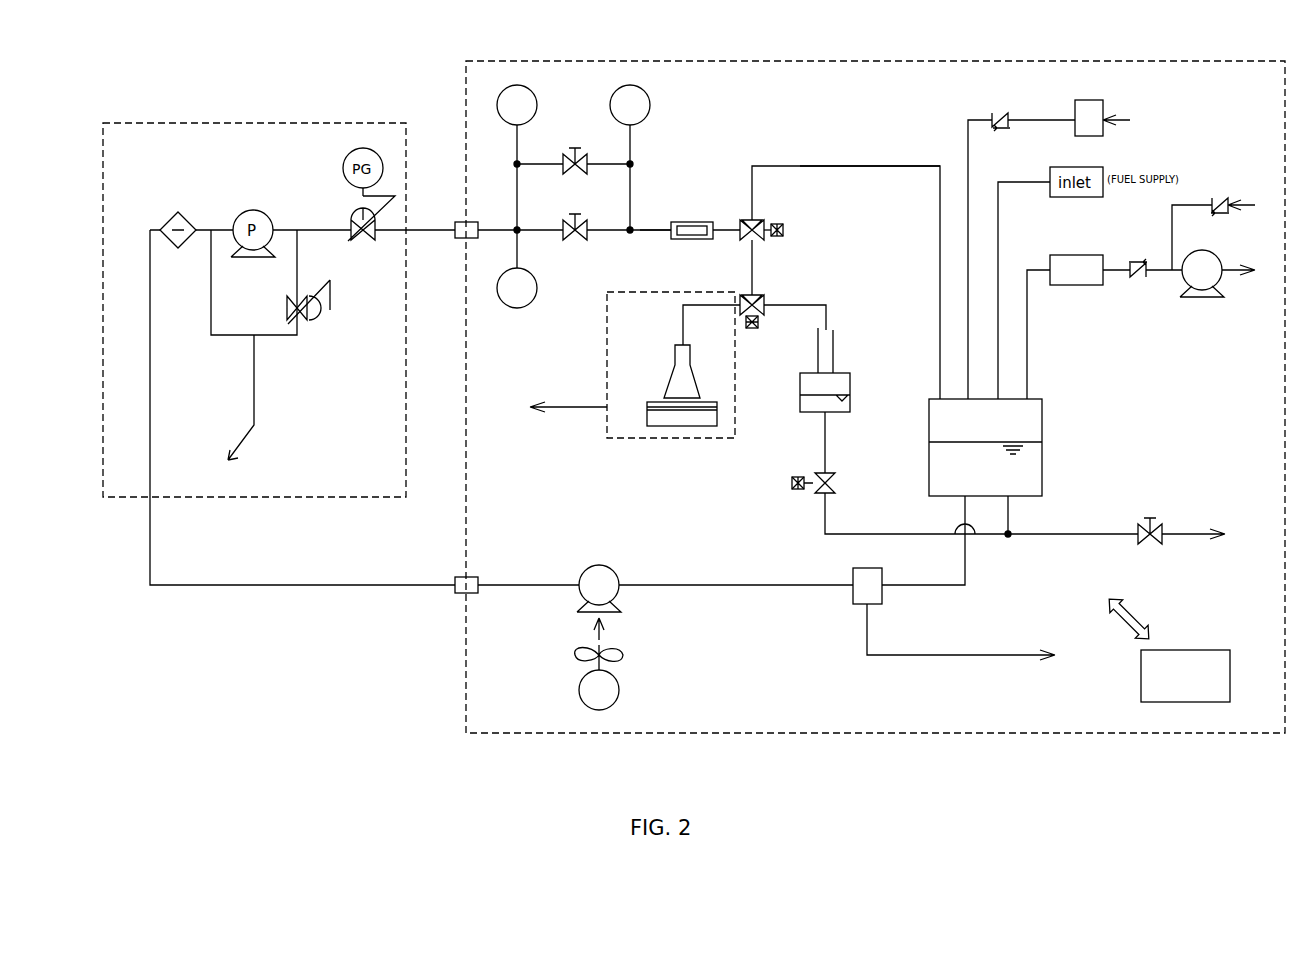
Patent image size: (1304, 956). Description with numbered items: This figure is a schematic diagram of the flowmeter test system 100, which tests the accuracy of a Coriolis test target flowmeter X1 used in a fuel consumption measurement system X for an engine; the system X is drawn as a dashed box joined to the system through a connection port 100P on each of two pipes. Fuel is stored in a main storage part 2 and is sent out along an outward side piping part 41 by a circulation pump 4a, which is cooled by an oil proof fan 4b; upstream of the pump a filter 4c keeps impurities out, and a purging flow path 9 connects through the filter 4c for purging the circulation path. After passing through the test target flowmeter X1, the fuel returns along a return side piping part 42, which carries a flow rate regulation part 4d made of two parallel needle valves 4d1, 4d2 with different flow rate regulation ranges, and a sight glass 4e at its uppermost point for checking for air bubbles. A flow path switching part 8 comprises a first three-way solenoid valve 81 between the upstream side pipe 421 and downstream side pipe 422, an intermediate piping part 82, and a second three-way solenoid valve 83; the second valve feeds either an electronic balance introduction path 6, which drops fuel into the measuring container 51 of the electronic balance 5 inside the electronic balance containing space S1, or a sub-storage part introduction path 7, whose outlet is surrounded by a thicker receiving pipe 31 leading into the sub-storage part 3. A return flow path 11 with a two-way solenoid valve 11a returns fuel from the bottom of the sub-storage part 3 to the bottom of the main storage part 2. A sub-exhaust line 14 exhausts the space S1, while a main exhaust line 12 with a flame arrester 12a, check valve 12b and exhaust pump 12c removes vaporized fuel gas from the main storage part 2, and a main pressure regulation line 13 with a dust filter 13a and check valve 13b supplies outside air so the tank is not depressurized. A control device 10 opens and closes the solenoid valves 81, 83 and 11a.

The flowmeter test system 100 is at (841, 58).
The fuel consumption measurement system X is at (254, 120).
The test target flowmeter X1 is at (178, 210).
The connection port 100P is at (460, 240).
The return side piping part 42 is at (775, 100).
The upstream side pipe 421 is at (655, 225).
The downstream side pipe 422 is at (818, 166).
The flow rate regulation part 4d is at (535, 196).
The needle valve 4d1 is at (575, 146).
The needle valve 4d2 is at (580, 243).
The sight glass 4e is at (697, 241).
The flow path switching part 8 is at (808, 260).
The first three-way solenoid valve 81 is at (777, 226).
The intermediate piping part 82 is at (757, 262).
The second three-way solenoid valve 83 is at (791, 299).
The electronic balance containing space S1 is at (645, 321).
The electronic balance introduction path 6 is at (710, 308).
The measuring container 51 is at (670, 375).
The electronic balance 5 is at (681, 428).
The sub-exhaust line 14 is at (570, 405).
The sub-storage part introduction path 7 is at (797, 308).
The receiving pipe 31 is at (836, 357).
The sub-storage part 3 is at (852, 396).
The return flow path 11 is at (822, 430).
The two-way solenoid valve 11a is at (790, 484).
The main storage part 2 is at (1044, 438).
The main pressure regulation line 13 is at (972, 162).
The check valve 13b is at (1003, 112).
The dust filter 13a is at (1106, 106).
The main exhaust line 12 is at (1030, 356).
The flame arrester 12a is at (1076, 288).
The check valve 12b is at (1138, 282).
The exhaust pump 12c is at (1200, 298).
The outward side piping part 41 is at (727, 590).
The circulation pump 4a is at (600, 563).
The oil proof fan 4b is at (572, 655).
The filter 4c is at (850, 590).
The purging flow path 9 is at (950, 658).
The control device 10 is at (1188, 648).